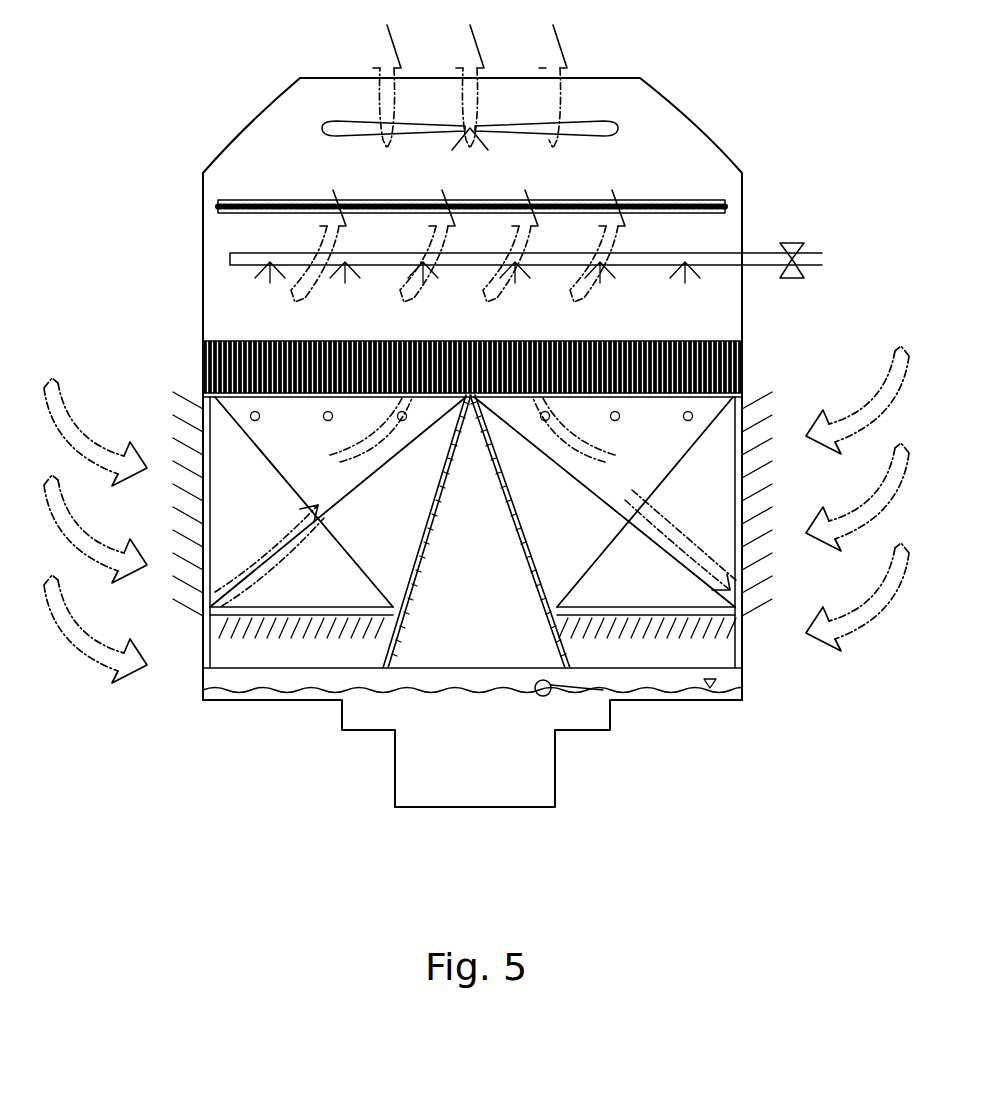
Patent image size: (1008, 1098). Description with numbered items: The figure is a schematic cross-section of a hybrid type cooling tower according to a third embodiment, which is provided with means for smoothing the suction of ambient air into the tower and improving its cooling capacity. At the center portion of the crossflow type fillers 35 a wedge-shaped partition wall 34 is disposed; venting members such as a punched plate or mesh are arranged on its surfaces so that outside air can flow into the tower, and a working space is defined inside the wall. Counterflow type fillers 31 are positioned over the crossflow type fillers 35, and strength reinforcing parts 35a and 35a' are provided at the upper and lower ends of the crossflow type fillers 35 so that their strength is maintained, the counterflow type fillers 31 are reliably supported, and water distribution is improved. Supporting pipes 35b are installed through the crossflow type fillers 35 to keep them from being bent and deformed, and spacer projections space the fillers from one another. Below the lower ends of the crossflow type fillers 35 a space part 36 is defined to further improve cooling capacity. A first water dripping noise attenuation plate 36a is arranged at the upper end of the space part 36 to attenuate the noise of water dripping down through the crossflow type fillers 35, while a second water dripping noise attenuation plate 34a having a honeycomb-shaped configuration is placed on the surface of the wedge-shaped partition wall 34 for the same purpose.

The counterflow type fillers 31 is at (716, 340).
The wedge-shaped partition wall 34 is at (413, 560).
The second water dripping noise attenuation plate 34a is at (413, 565).
The crossflow type fillers 35 is at (373, 598).
The strength reinforcing part 35a is at (790, 514).
The strength reinforcing part 35a' is at (646, 686).
The supporting pipes 35b is at (192, 437).
The space part 36 is at (225, 643).
The first water dripping noise attenuation plate 36a is at (262, 667).